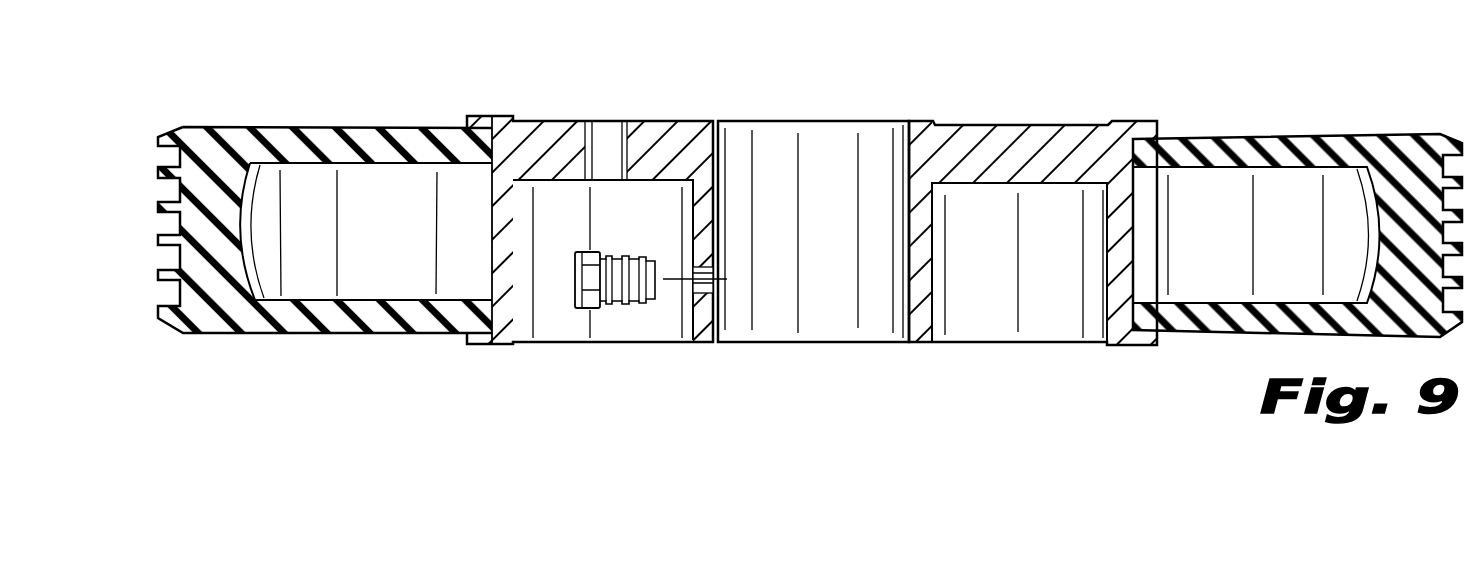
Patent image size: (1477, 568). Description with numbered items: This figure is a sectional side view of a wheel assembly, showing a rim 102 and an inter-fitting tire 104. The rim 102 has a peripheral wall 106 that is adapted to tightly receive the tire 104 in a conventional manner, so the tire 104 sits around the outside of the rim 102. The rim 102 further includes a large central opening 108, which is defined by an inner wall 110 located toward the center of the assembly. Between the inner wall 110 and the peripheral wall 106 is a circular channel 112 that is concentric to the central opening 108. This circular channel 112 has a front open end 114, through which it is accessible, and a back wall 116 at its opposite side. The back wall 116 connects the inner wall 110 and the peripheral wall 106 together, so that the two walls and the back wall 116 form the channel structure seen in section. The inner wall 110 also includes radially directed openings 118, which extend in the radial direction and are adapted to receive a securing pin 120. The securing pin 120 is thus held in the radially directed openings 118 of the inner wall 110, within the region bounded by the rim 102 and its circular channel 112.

The rim 102 is at (619, 100).
The tire 104 is at (232, 127).
The peripheral wall 106 is at (490, 225).
The central opening 108 is at (820, 197).
The inner wall 110 is at (714, 305).
The circular channel 112 is at (988, 262).
The front open end 114 is at (1044, 368).
The back wall 116 is at (1043, 183).
The radially directed openings 118 is at (693, 292).
The securing pin 120 is at (577, 307).